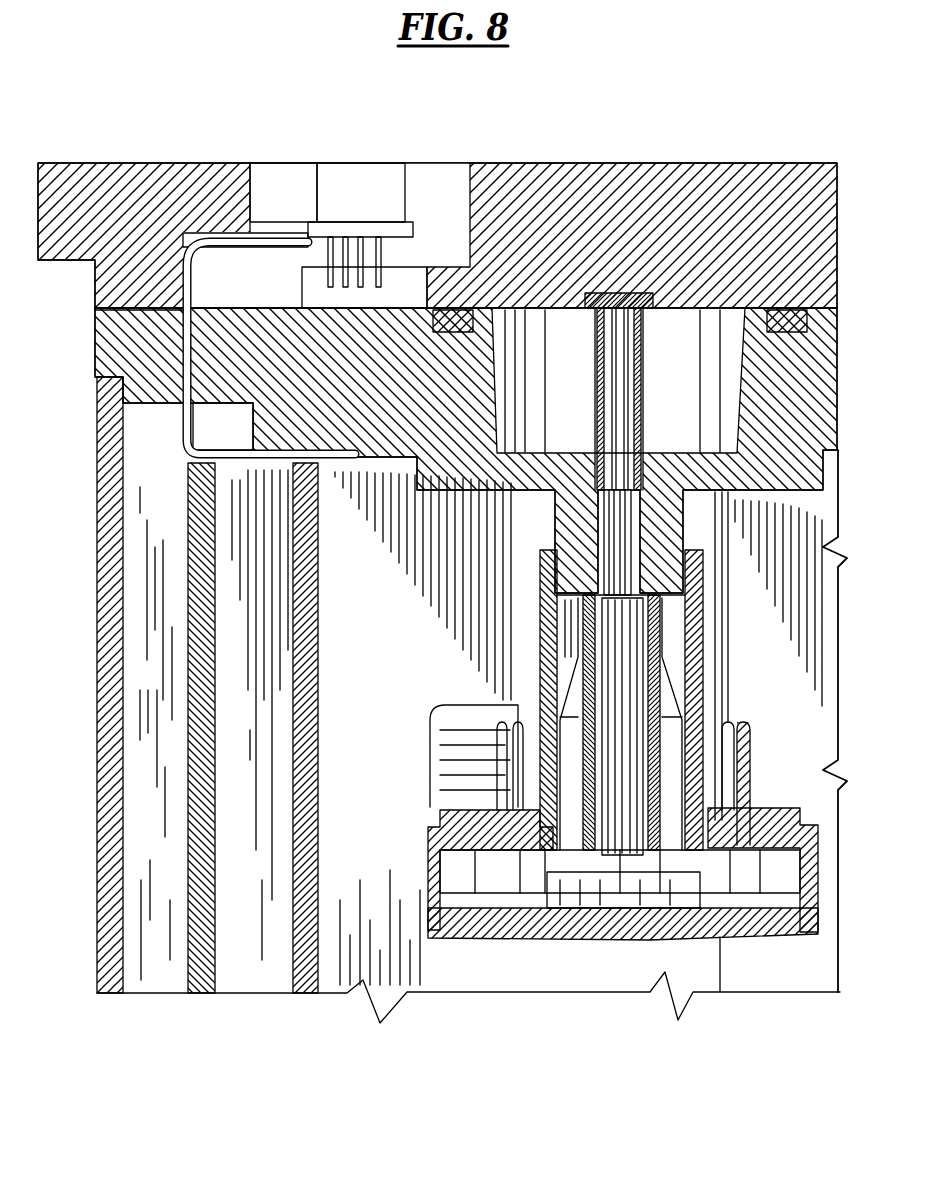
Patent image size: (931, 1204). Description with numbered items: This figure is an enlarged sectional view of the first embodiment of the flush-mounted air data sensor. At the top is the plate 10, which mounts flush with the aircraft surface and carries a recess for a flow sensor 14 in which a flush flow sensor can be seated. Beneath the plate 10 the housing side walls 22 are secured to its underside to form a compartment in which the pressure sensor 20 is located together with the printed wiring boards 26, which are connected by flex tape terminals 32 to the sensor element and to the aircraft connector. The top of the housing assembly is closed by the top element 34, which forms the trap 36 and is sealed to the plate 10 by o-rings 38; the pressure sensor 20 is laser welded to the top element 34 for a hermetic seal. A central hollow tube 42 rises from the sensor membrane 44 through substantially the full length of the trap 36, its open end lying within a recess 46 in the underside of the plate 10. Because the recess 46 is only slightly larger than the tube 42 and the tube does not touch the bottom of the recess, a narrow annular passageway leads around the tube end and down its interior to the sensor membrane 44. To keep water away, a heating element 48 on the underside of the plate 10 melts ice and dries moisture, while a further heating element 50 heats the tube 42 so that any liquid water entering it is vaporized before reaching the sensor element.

The plate 10 is at (522, 163).
The recess for a flow sensor 14 is at (280, 183).
The pressure sensor 20 is at (557, 725).
The side walls 22 is at (97, 668).
The printed wiring boards 26 is at (205, 847).
The flex tape terminals 32 is at (103, 311).
The top element 34 is at (462, 440).
The trap 36 is at (530, 328).
The o-rings 38 is at (455, 322).
The central hollow tube 42 is at (647, 343).
The sensor membrane 44 is at (570, 913).
The recess 46 is at (628, 300).
The heating element 48 is at (806, 320).
The heating element 50 is at (647, 390).